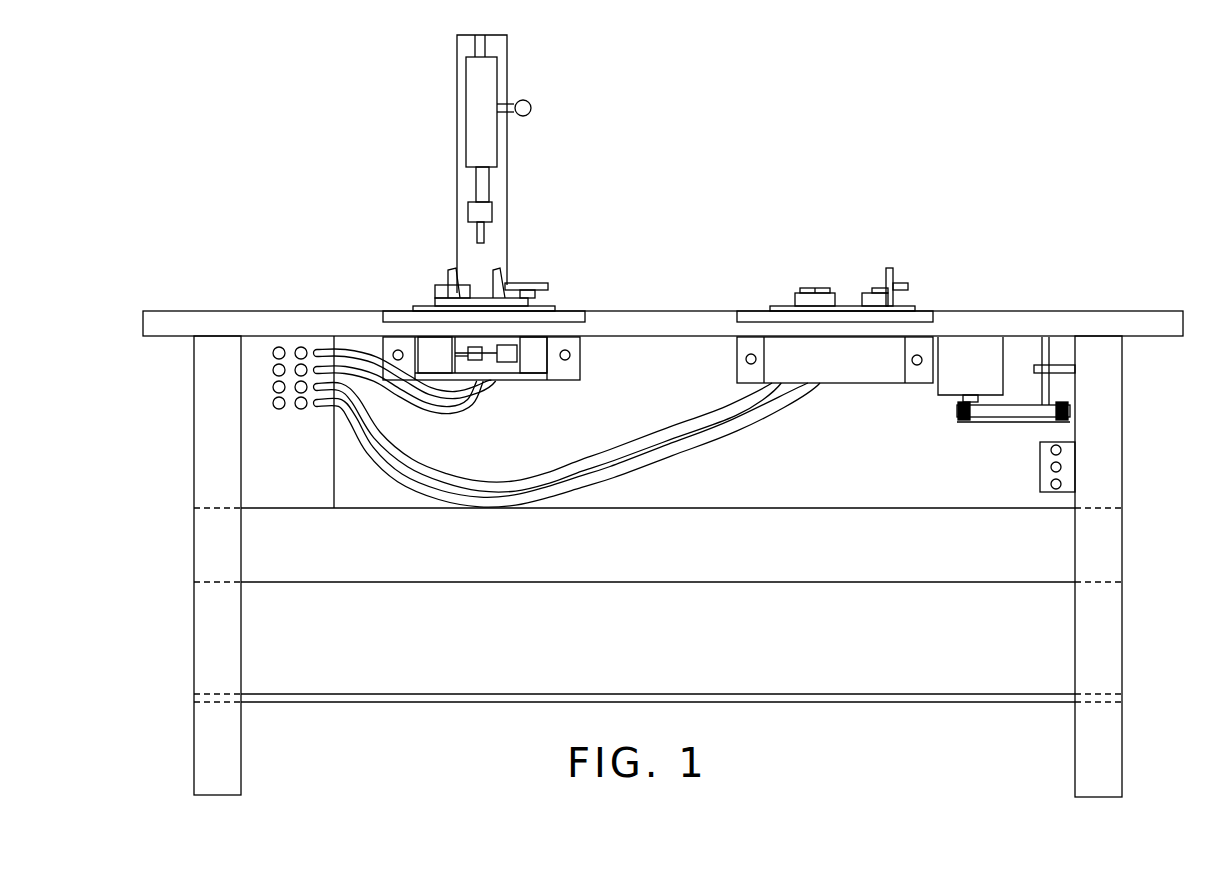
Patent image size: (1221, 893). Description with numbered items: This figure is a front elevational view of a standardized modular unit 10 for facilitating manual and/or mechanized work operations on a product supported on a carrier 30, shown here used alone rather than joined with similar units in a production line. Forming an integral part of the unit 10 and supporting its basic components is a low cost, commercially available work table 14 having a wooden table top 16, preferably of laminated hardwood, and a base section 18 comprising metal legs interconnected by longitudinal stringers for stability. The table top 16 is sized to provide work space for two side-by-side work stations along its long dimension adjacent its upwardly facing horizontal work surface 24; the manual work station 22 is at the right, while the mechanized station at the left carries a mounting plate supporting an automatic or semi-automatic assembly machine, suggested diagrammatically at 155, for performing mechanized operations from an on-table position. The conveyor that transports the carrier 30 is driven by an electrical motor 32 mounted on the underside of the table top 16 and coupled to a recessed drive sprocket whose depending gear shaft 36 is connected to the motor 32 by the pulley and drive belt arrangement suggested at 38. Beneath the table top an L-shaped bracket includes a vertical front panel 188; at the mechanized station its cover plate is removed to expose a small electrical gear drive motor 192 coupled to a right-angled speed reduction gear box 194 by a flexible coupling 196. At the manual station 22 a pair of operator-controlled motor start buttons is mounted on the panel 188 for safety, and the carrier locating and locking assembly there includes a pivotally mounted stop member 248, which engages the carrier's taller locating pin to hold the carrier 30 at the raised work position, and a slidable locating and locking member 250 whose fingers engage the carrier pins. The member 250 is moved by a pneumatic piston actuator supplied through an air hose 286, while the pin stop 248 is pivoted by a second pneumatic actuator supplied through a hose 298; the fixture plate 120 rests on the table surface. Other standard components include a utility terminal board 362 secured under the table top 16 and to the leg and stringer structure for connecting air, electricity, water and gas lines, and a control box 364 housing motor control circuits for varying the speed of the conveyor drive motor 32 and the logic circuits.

The standardized modular unit 10 is at (675, 496).
The work table 14 is at (700, 566).
The table top 16 is at (665, 300).
The base section 18 is at (1058, 720).
The work station 22 is at (857, 280).
The work surface 24 is at (694, 310).
The carrier 30 is at (443, 292).
The electrical motor 32 is at (948, 388).
The gear shaft 36 is at (1042, 353).
The pulley and drive belt arrangement 38 is at (1017, 420).
The first fixture 120 is at (506, 289).
The automatic or semi-automatic assembly machine 155 is at (540, 163).
The vertical front panel 188 is at (814, 380).
The electrical gear drive motor 192 is at (485, 342).
The right-angled speed reduction gear box 194 is at (535, 366).
The flexible coupling 196 is at (476, 360).
The stop member 248 is at (889, 272).
The locating and locking member 250 is at (830, 292).
The air hose 286 is at (455, 397).
The hose 298 is at (447, 420).
The utility terminal board 362 is at (280, 492).
The control box 364 is at (1040, 480).